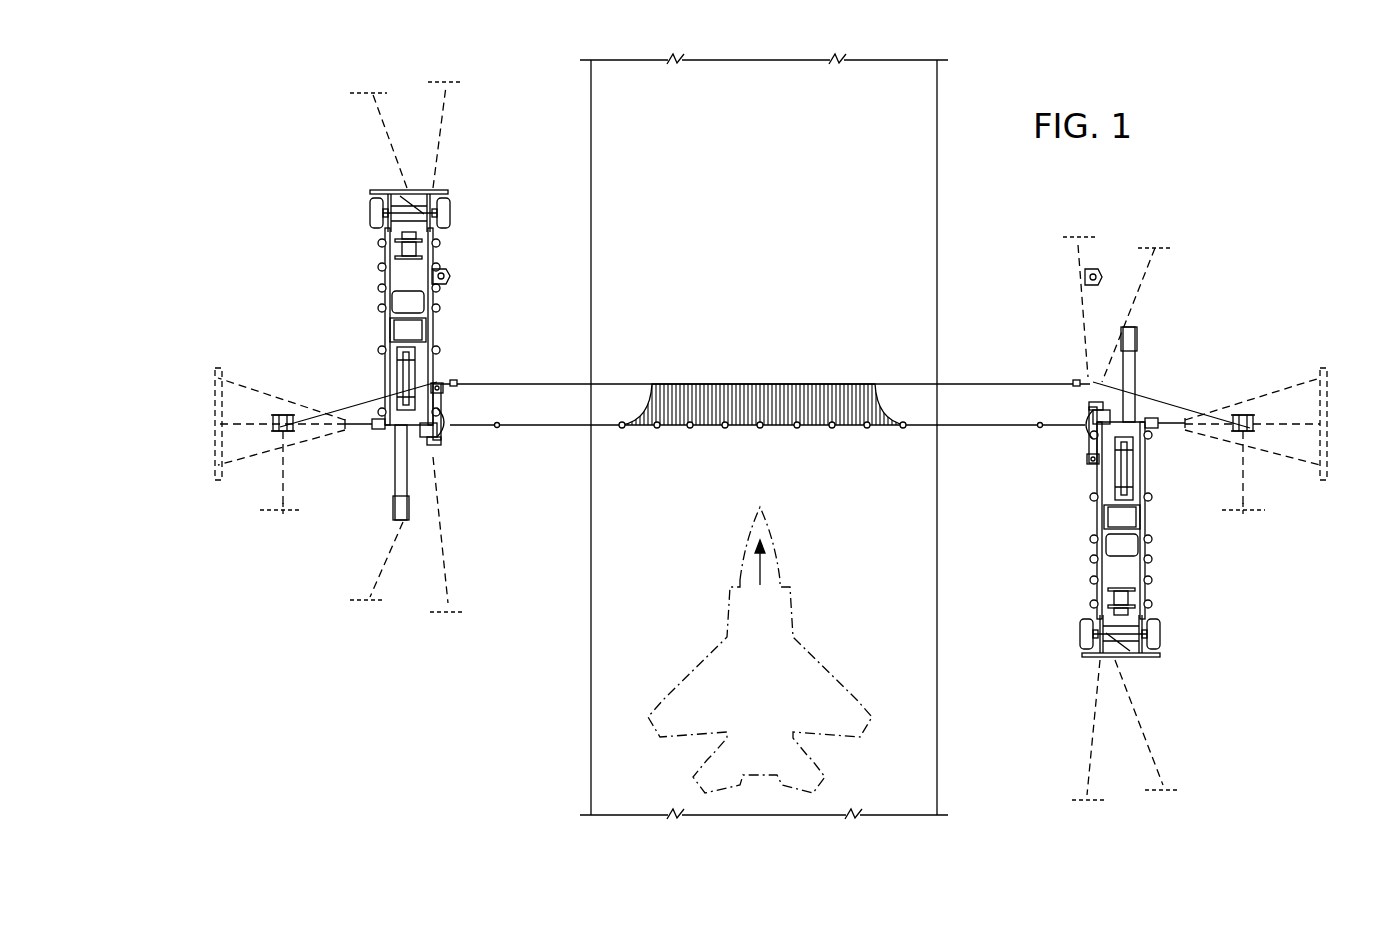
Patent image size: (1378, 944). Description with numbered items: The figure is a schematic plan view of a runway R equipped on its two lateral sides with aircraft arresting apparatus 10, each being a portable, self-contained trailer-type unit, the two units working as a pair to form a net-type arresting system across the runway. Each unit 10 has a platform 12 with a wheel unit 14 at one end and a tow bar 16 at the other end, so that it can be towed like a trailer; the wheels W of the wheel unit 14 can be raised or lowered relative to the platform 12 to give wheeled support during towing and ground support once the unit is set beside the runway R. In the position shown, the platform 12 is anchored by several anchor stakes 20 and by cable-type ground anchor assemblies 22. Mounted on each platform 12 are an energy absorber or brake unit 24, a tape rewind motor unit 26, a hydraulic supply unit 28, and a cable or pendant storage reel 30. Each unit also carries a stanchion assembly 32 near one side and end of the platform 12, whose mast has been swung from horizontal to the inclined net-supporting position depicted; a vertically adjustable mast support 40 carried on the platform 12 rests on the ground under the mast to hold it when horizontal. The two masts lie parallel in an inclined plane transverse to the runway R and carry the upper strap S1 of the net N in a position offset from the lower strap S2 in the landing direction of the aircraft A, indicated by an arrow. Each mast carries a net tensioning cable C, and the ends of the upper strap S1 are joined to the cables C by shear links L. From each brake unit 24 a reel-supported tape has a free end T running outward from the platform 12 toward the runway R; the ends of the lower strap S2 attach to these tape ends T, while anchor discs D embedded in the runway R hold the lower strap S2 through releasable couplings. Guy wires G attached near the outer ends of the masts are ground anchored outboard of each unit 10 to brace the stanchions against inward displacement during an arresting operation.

The aircraft arresting apparatus 10 is at (332, 276).
The platform 12 is at (393, 280).
The wheel unit 14 is at (370, 212).
The tow bar 16 is at (395, 510).
The anchor stakes 20 is at (440, 308).
The cable-type ground anchor assemblies 22 is at (370, 92).
The energy absorber or brake unit 24 is at (395, 372).
The tape rewind motor unit 26 is at (400, 332).
The hydraulic supply unit 28 is at (420, 300).
The cable or pendant storage reel 30 is at (398, 250).
The stanchion assembly 32 is at (452, 438).
The vertically adjustable mast support 40 is at (448, 277).
The aircraft A is at (783, 638).
The net tensioning cable C is at (440, 383).
The anchor discs D is at (657, 430).
The guy wires G is at (350, 406).
The shear links L is at (457, 383).
The net N is at (815, 396).
The runway R is at (938, 186).
The upper strap S1 is at (522, 384).
The lower strap S2 is at (545, 425).
The free end of tape T is at (498, 428).
The wheels W is at (449, 205).